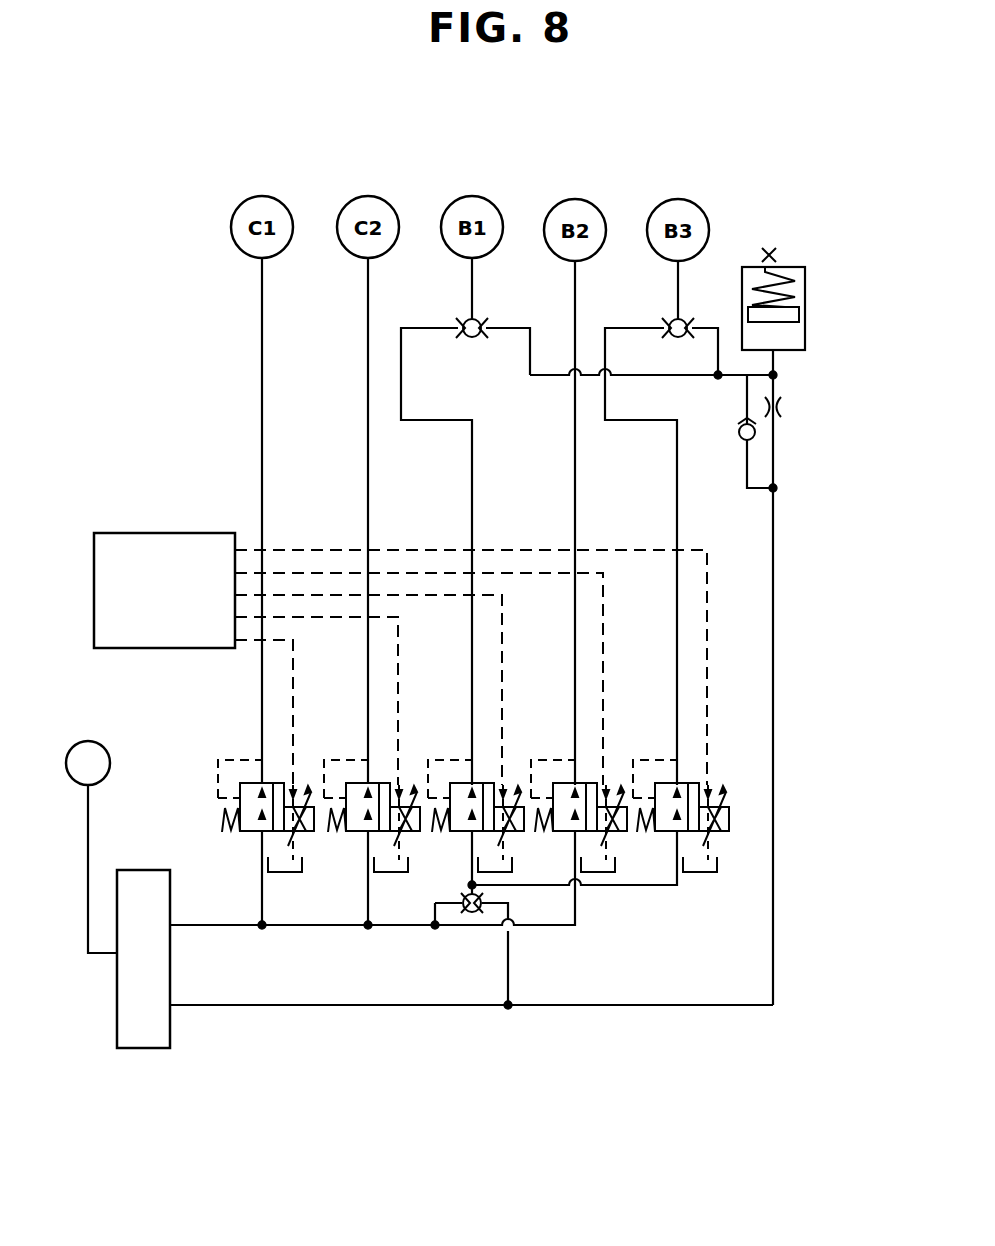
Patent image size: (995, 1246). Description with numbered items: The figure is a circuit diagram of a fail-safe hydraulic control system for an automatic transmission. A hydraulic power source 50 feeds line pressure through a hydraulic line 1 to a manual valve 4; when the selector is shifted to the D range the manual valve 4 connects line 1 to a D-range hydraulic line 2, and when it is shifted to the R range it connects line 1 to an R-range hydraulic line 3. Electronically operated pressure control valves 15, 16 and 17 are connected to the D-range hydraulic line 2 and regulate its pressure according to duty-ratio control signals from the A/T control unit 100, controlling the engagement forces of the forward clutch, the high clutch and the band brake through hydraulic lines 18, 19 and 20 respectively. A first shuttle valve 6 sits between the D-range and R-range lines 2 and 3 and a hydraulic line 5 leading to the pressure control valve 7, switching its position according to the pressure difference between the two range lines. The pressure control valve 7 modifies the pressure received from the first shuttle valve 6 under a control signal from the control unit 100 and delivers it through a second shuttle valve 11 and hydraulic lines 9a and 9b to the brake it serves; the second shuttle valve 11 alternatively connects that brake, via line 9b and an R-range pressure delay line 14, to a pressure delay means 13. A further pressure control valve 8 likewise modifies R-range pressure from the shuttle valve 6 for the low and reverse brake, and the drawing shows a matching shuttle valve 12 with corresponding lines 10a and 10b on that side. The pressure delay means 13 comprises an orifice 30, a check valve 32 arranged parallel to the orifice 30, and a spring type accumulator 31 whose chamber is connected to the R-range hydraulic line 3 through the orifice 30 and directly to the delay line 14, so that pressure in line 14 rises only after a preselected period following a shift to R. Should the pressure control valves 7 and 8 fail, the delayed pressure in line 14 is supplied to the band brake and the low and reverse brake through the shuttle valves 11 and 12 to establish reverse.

The hydraulic line 1 is at (88, 844).
The D-range hydraulic line 2 is at (347, 926).
The R-range hydraulic line 3 is at (336, 1006).
The manual valve 4 is at (145, 870).
The hydraulic line 5 is at (470, 870).
The first shuttle valve 6 is at (472, 913).
The pressure control valve 7 is at (484, 780).
The pressure control valve 8 is at (688, 780).
The hydraulic line 9a is at (428, 328).
The hydraulic line 9b is at (472, 284).
The bypass passage 10a is at (636, 328).
The passage to B3 10b is at (677, 282).
The second shuttle valve 11 is at (485, 323).
The shuttle valve 12 is at (686, 320).
The pressure delay means 13 is at (796, 357).
The R-range pressure delay line 14 is at (694, 377).
The pressure control valve 15 is at (276, 782).
The pressure control valve 16 is at (381, 782).
The pressure control valve 17 is at (588, 780).
The hydraulic line 18 is at (262, 458).
The hydraulic line 19 is at (368, 458).
The hydraulic line 20 is at (575, 458).
The orifice 30 is at (784, 403).
The spring type accumulator 31 is at (800, 267).
The check valve 32 is at (740, 437).
The hydraulic power source 50 is at (106, 752).
The A/T control unit 100 is at (138, 533).